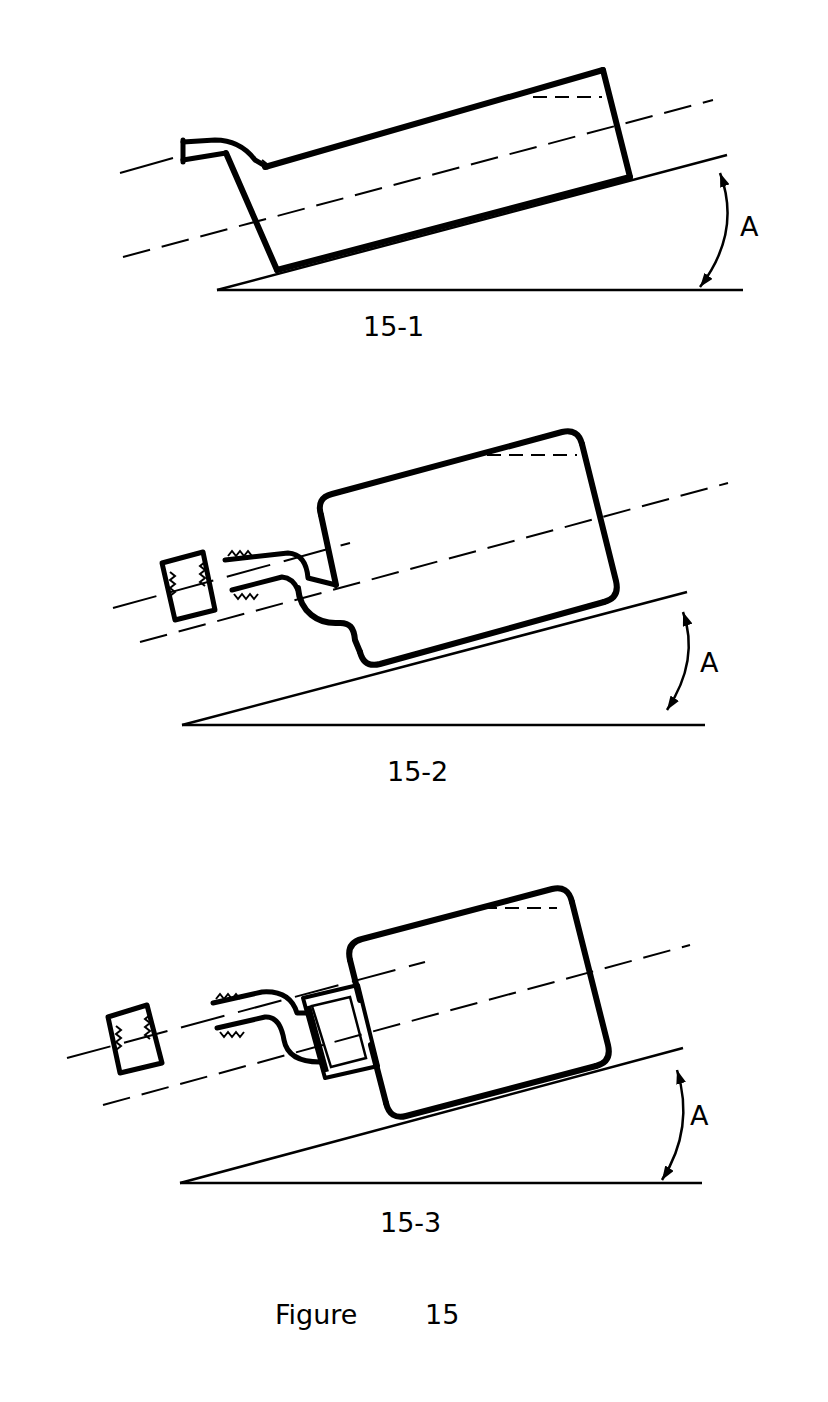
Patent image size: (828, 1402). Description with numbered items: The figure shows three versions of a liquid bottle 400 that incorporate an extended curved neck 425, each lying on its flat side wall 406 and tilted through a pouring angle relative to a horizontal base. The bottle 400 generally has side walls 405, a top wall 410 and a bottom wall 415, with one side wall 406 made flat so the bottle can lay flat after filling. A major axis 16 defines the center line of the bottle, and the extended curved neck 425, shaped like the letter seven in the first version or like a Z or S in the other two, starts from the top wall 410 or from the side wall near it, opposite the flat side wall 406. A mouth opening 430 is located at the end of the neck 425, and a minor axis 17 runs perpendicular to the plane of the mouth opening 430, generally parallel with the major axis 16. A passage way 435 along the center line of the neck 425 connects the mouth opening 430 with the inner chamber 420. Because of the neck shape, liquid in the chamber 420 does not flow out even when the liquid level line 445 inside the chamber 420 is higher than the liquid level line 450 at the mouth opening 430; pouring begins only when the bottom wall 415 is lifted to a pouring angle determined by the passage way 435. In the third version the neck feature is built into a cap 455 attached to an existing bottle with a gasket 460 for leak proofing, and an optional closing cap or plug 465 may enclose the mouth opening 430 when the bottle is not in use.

The major axis 16 is at (417, 606).
The minor axis 17 is at (250, 137).
The liquid bottle 400 is at (452, 75).
The side walls 405 is at (415, 122).
The flat side wall 406 is at (543, 207).
The top wall 410 is at (247, 233).
The bottom wall 415 is at (617, 107).
The inner chamber 420 is at (427, 182).
The extended curved neck 425 is at (212, 137).
The mouth opening 430 is at (178, 155).
The passage way 435 is at (265, 157).
The liquid level line inside the chamber 445 is at (590, 98).
The liquid level line at the mouth opening 450 is at (227, 167).
The cap 455 is at (353, 1073).
The gasket 460 is at (317, 1070).
The closing cap or plug 465 is at (207, 617).